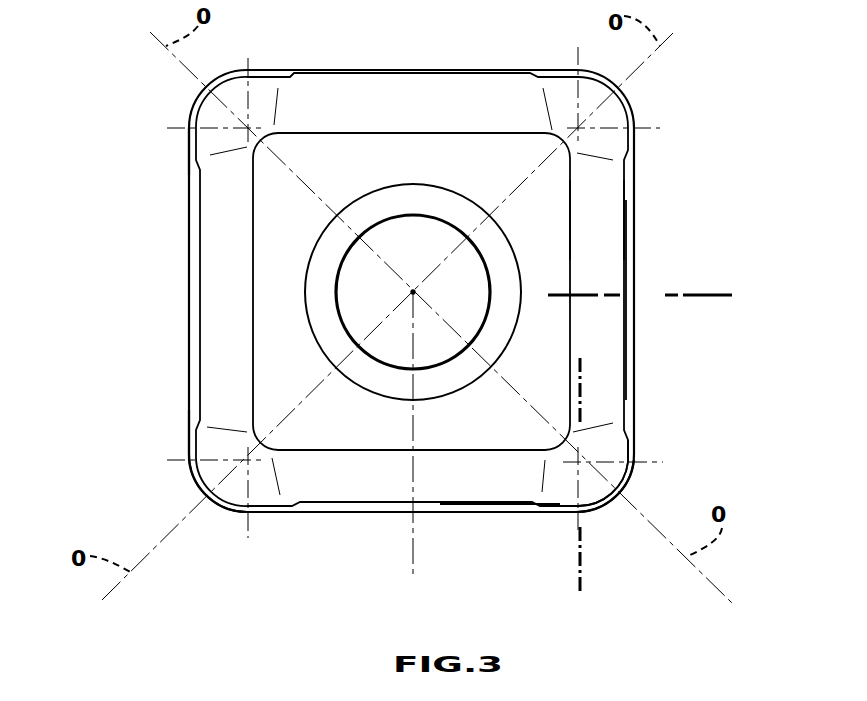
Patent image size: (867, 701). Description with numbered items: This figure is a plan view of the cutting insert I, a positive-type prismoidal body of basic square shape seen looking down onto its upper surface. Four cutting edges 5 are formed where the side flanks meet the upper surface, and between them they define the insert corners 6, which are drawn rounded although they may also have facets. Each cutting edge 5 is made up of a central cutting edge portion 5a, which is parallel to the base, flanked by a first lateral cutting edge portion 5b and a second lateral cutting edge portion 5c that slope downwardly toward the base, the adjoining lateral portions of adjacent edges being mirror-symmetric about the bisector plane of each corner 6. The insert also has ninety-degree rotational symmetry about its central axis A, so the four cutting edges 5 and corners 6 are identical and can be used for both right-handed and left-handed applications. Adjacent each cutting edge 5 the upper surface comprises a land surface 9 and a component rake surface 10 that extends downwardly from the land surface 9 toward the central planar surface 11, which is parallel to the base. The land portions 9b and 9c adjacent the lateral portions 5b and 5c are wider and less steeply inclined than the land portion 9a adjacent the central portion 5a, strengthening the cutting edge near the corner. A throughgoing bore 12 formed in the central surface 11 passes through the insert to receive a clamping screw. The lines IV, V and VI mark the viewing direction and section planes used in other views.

The cutting edge 5 is at (347, 70).
The central cutting edge portion 5a is at (367, 515).
The first lateral cutting edge portion 5b is at (190, 152).
The second lateral cutting edge portion 5c is at (190, 452).
The insert corner 6 is at (414, 503).
The land surface 9 is at (612, 293).
The land portion adjacent central cutting edge portion 9a is at (632, 320).
The land portion adjacent first lateral cutting edge portion 9b is at (632, 462).
The land portion adjacent second lateral cutting edge portion 9c is at (570, 513).
The component rake surface 10 is at (615, 225).
The central planar surface 11 is at (497, 160).
The throughgoing bore 12 is at (445, 290).
The central axis A is at (407, 290).
The cutting insert I is at (643, 118).
The view line IV is at (318, 548).
The section line V is at (578, 377).
The section line VI is at (592, 301).